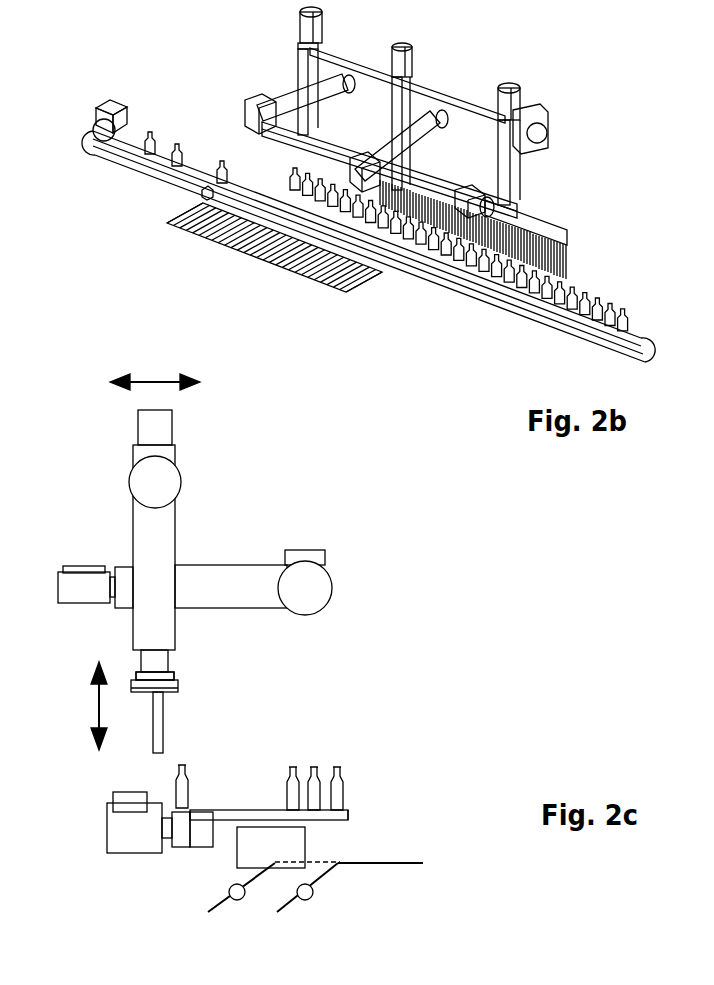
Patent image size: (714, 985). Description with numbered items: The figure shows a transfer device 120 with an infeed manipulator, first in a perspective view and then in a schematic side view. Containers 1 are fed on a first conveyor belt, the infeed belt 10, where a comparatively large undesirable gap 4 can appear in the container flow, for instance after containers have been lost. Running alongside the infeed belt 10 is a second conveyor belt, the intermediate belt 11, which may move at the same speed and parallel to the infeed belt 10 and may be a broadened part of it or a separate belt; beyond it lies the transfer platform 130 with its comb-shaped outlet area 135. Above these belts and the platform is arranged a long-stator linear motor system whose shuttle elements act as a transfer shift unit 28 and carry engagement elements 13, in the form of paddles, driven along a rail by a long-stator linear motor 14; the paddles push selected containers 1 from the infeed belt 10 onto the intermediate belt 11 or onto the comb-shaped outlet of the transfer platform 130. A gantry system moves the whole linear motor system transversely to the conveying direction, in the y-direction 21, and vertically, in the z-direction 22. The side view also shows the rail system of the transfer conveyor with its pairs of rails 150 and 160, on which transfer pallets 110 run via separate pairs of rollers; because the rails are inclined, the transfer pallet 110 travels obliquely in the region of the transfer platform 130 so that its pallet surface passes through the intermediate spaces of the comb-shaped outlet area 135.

In FIG. 2c, the containers 1 is at (293, 760).
In FIG. 2b, the undesirable gaps 4 is at (487, 275).
In FIG. 2c, the infeed belt 10 is at (177, 817).
In FIG. 2b, the intermediate belt 11 is at (420, 262).
In FIG. 2c, the intermediate belt 11 is at (197, 837).
In FIG. 2c, the engagement elements 13 is at (163, 722).
In FIG. 2c, the long-stator linear motor 14 is at (150, 661).
In FIG. 2c, the y-direction 21 is at (148, 381).
In FIG. 2c, the vertical z-direction movement 22 is at (97, 712).
In FIG. 2c, the transfer shift unit 28 is at (196, 667).
In FIG. 2c, the transfer pallets 110 is at (305, 855).
In FIG. 2b, the transfer device 120 is at (176, 95).
In FIG. 2b, the transfer platform 130 is at (222, 243).
In FIG. 2c, the transfer platform 130 is at (243, 808).
In FIG. 2c, the comb-shaped outlet area 135 is at (348, 816).
In FIG. 2c, the pair of rails 150 is at (423, 863).
In FIG. 2c, the pair of rails 160 is at (263, 883).